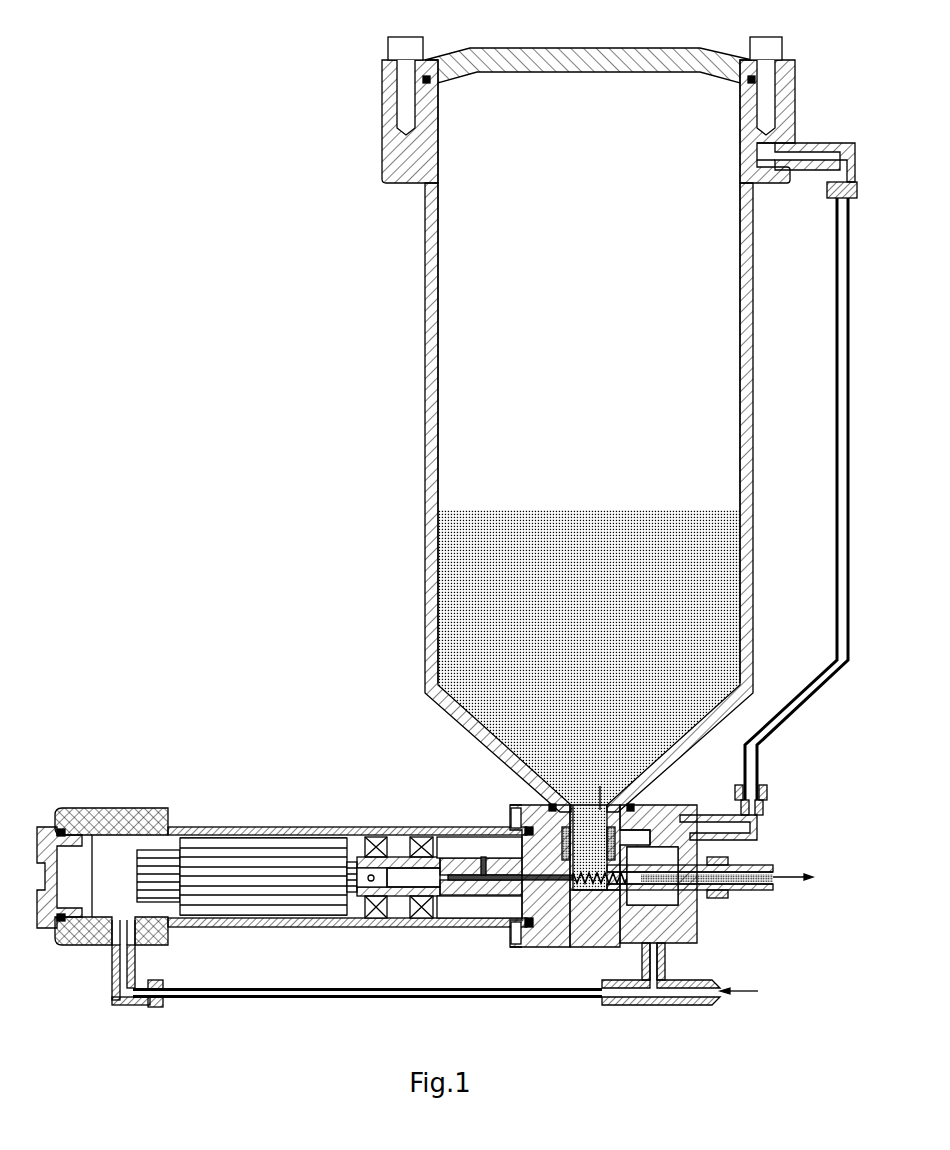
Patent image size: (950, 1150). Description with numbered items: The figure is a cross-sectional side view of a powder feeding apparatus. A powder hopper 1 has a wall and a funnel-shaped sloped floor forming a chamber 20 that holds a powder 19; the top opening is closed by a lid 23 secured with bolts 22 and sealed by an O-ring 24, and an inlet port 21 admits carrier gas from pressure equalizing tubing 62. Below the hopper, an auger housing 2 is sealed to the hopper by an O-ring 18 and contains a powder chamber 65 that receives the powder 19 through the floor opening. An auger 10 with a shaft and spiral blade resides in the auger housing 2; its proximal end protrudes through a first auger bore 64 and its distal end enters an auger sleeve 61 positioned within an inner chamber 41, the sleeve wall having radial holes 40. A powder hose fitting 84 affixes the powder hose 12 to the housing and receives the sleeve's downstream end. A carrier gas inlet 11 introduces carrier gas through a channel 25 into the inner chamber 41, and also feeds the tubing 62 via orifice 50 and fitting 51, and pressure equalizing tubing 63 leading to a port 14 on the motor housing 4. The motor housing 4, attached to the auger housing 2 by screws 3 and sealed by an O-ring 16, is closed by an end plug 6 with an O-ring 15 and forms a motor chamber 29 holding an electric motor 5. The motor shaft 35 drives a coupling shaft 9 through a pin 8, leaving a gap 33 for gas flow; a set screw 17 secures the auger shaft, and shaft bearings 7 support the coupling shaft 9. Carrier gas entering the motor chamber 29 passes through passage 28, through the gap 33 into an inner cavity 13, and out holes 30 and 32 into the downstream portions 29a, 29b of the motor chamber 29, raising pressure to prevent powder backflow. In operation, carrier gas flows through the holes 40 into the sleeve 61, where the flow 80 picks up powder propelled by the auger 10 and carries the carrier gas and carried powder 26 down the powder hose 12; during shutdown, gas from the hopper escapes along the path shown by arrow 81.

The powder hopper 1 is at (747, 348).
The auger housing 2 is at (697, 940).
The screws 3 is at (515, 812).
The motor housing 4 is at (210, 828).
The electric motor 5 is at (255, 850).
The end plug 6 is at (45, 826).
The shaft bearings 7 is at (415, 912).
The pin 8 is at (358, 876).
The coupling shaft 9 is at (460, 900).
The auger 10 is at (554, 947).
The carrier gas inlet 11 is at (695, 1005).
The powder hose 12 is at (737, 886).
The inner cavity 13 is at (420, 845).
The carrier gas inlet port 14 is at (112, 996).
The O-ring 15 is at (78, 808).
The O-ring 16 is at (525, 830).
The set screw 17 is at (481, 860).
The O-ring 18 is at (650, 795).
The powder 19 is at (723, 592).
The chamber 20 is at (474, 338).
The inlet port 21 is at (813, 143).
The bolts 22 is at (783, 50).
The lid 23 is at (626, 50).
The O-ring 24 is at (757, 76).
The channel 25 is at (666, 950).
The carrier gas and carried powder 26 is at (775, 875).
The passage 28 is at (185, 827).
The motor chamber 29 is at (127, 858).
The downstream portion of motor chamber 29a is at (400, 858).
The upstream end of motor chamber 29b is at (490, 906).
The holes 30 is at (380, 845).
The holes 32 is at (445, 866).
The gap 33 is at (370, 895).
The motor shaft 35 is at (352, 862).
The radial holes 40 is at (597, 947).
The inner chamber 41 is at (622, 947).
The orifice 50 is at (693, 806).
The fitting 51 is at (766, 812).
The auger sleeve 61 is at (698, 893).
The pressure equalizing tubing 62 is at (834, 647).
The pressure equalizing tubing 63 is at (490, 998).
The first auger bore 64 is at (527, 947).
The powder chamber 65 is at (580, 947).
The carrier gas flow 80 is at (718, 884).
The gas flow arrow 81 is at (605, 786).
The powder hose fitting 84 is at (723, 856).